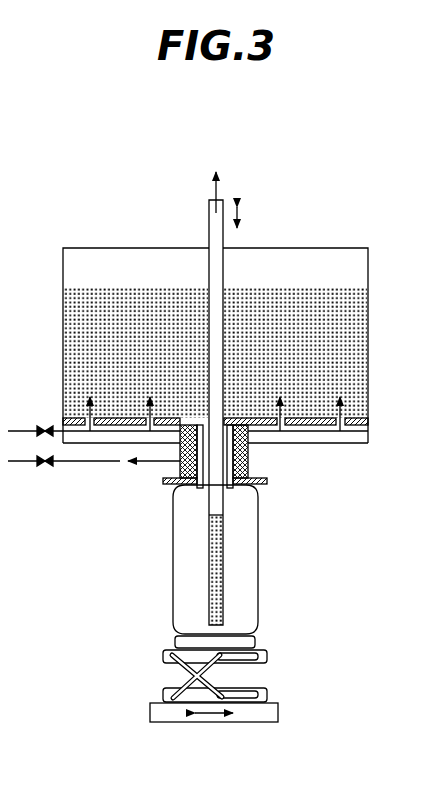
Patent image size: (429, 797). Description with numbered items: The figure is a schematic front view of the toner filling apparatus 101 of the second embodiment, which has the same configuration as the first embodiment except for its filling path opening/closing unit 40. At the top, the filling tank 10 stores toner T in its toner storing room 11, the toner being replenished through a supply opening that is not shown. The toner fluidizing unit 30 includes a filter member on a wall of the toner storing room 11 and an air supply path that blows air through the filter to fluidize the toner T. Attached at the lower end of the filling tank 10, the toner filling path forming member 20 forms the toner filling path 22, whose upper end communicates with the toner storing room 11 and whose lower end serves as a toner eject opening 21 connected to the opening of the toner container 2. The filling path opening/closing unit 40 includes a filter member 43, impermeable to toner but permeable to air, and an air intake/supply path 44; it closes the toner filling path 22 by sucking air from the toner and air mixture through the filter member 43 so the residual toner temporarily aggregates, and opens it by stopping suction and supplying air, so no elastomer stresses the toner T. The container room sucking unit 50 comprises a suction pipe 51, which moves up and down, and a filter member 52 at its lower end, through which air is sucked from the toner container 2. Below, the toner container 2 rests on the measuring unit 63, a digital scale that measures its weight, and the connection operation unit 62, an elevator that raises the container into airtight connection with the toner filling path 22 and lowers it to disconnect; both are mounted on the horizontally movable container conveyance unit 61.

The toner filling apparatus 101 is at (309, 174).
The filling tank 10 is at (368, 275).
The toner storing room 11 is at (325, 261).
The toner T is at (77, 318).
The toner fluidizing unit 30 is at (60, 430).
The filling path opening/closing unit 40 is at (88, 534).
The filter member 43 is at (178, 472).
The air intake/supply path 44 is at (63, 462).
The toner filling path forming member 20 is at (245, 450).
The toner filling path 22 is at (180, 463).
The toner eject opening 21 is at (197, 489).
The container room sucking unit 50 is at (228, 509).
The suction pipe 51 is at (212, 498).
The filter member 52 is at (218, 582).
The toner container 2 is at (258, 556).
The measuring unit 63 is at (245, 642).
The connection operation unit 62 is at (265, 697).
The container conveyance unit 61 is at (278, 715).